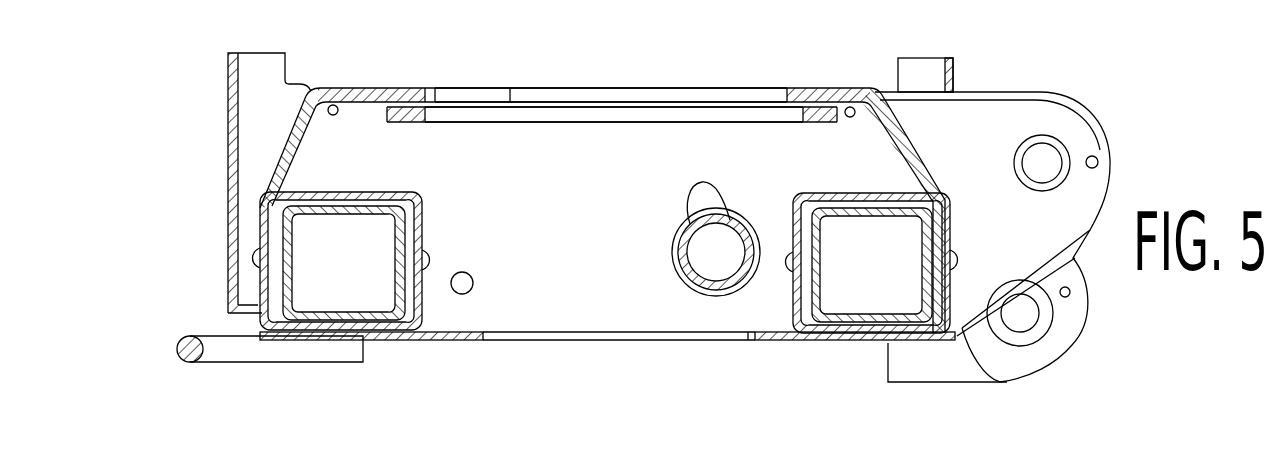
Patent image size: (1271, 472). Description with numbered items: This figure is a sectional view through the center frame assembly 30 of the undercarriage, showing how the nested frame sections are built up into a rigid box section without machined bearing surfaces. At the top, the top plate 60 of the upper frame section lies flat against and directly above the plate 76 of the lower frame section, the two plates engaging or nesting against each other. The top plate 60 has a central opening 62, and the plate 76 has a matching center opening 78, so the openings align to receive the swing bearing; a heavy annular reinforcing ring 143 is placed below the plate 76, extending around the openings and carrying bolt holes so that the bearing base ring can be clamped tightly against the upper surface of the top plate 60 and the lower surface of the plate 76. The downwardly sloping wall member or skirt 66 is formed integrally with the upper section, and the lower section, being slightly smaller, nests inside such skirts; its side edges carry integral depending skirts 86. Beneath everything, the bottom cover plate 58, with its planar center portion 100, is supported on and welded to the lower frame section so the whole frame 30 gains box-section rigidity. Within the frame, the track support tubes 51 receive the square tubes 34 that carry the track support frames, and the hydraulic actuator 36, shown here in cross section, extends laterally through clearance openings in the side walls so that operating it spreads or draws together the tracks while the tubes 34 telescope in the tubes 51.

The center frame assembly 30 is at (360, 78).
The square tube 34 is at (393, 231).
The hydraulic actuator 36 is at (677, 247).
The tube 51 is at (377, 192).
The bottom cover plate 58 is at (436, 348).
The top plate 60 is at (417, 90).
The opening 62 is at (697, 93).
The rear skirt 66 is at (280, 162).
The plate 76 is at (373, 107).
The center opening 78 is at (655, 108).
The side skirt 86 is at (597, 130).
The planar center portion 100 is at (765, 343).
The reinforcing ring 143 is at (530, 110).